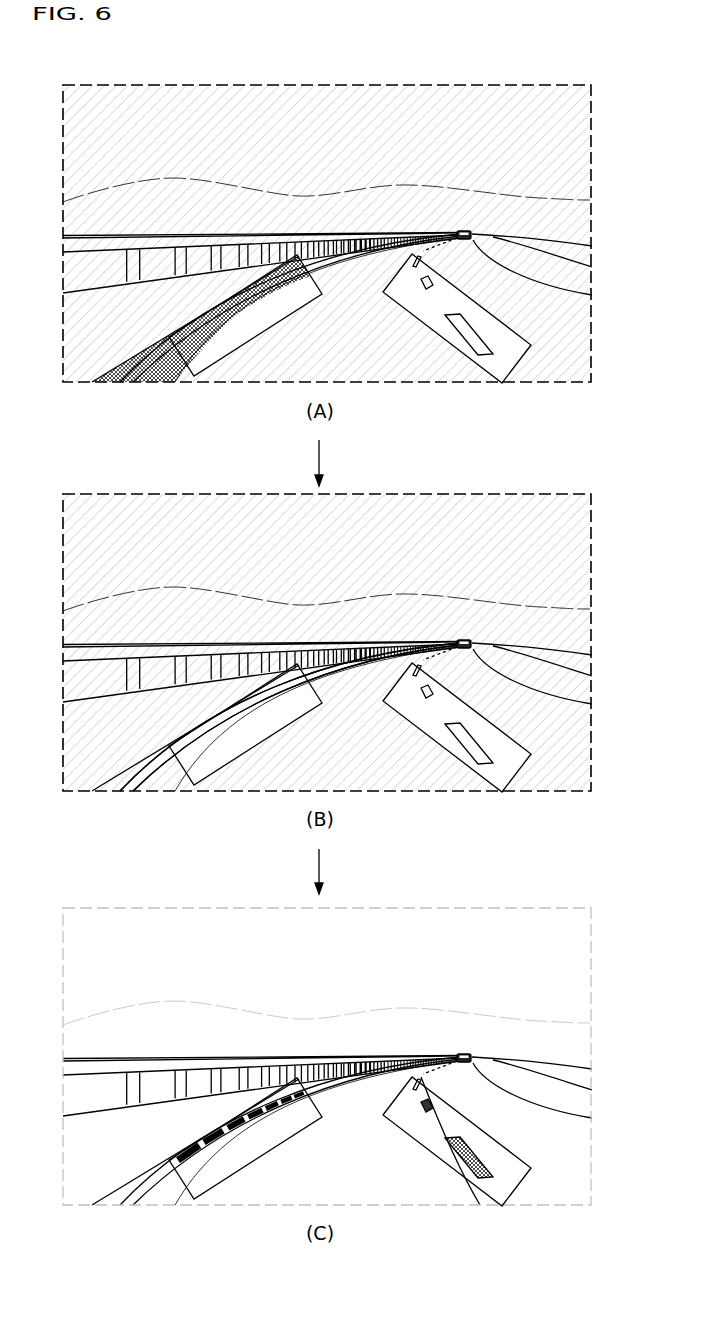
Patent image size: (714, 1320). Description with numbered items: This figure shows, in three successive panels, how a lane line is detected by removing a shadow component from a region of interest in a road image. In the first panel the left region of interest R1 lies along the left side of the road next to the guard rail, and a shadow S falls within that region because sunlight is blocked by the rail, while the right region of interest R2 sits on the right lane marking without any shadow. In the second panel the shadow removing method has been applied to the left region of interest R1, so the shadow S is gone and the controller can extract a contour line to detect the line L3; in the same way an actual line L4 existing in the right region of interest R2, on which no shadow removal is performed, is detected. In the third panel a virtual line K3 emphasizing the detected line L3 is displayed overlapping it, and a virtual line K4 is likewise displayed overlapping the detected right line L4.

The shadow S is at (227, 327).
The left region of interest R1 is at (273, 330).
The right region of interest R2 is at (424, 326).
The line L3 is at (290, 740).
The line L4 is at (469, 773).
The virtual line K3 is at (241, 1168).
The virtual line K4 is at (471, 1185).